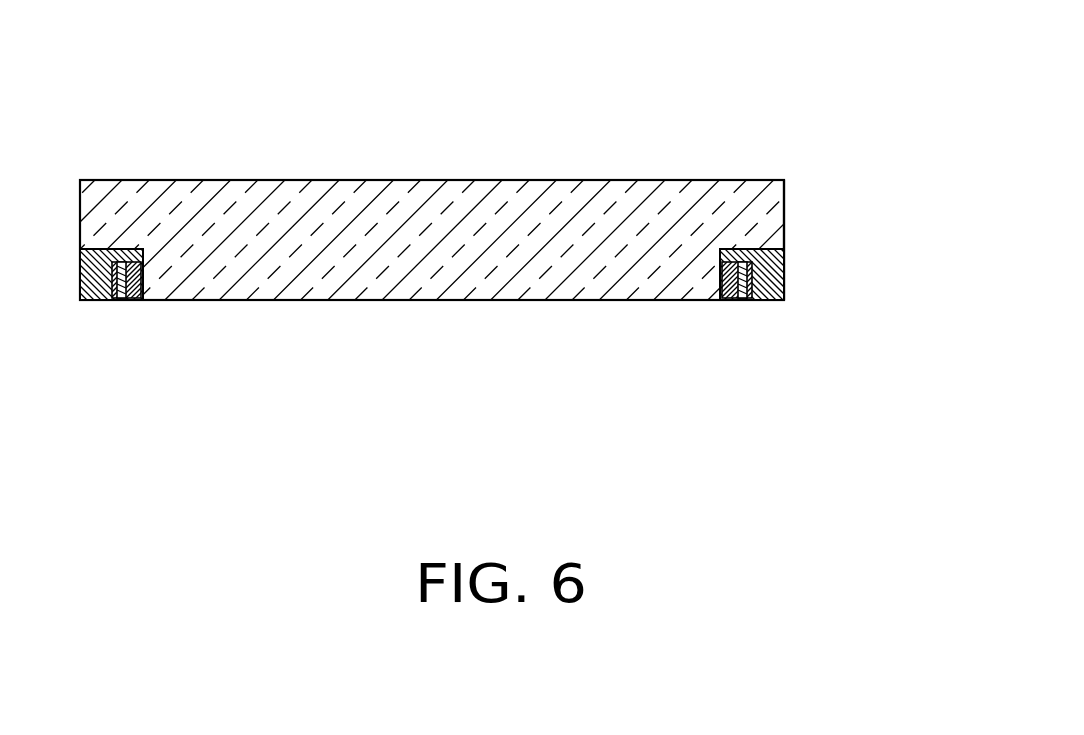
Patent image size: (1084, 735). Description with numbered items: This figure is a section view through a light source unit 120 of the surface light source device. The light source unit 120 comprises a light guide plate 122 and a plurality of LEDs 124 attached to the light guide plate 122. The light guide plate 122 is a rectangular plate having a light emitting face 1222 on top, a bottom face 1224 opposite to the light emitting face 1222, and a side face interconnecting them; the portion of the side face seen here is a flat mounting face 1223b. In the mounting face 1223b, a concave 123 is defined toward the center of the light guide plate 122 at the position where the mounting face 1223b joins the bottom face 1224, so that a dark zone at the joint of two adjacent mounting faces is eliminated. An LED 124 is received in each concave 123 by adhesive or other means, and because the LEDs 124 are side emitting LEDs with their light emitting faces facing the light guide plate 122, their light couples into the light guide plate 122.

The light source unit 120 is at (517, 50).
The light guide plate 122 is at (535, 193).
The light emitting face 1222 is at (273, 178).
The bottom face 1224 is at (286, 302).
The mounting face 1223b is at (788, 213).
The concave 123 is at (775, 250).
The LED 124 is at (773, 277).